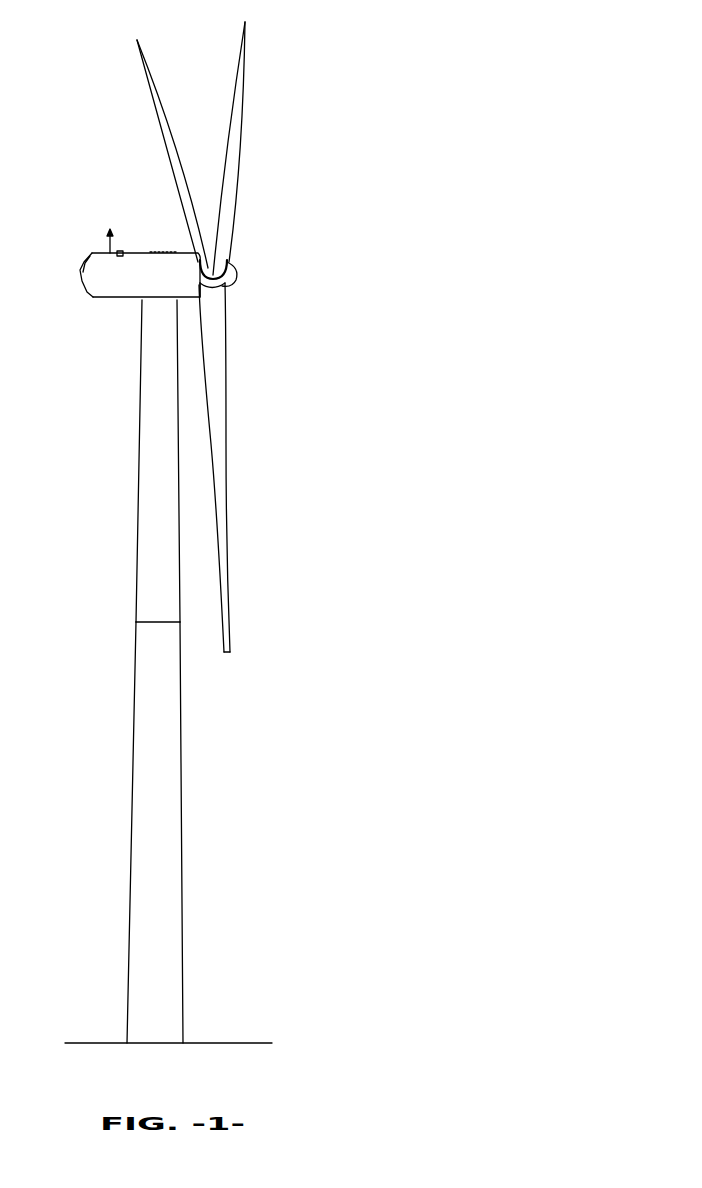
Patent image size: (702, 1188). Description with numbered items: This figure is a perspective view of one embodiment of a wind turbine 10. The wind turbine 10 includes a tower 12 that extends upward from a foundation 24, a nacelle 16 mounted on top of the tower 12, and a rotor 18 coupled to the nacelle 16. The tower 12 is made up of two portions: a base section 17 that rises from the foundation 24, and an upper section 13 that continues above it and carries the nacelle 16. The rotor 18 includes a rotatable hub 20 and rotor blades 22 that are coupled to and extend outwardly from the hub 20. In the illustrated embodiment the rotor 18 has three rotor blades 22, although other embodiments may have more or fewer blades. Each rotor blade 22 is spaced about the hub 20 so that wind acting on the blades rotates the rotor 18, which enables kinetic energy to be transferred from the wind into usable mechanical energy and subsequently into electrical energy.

The wind turbine 10 is at (369, 109).
The tower 12 is at (163, 720).
The upper section 13 is at (152, 502).
The nacelle 16 is at (112, 283).
The base section 17 is at (150, 853).
The rotor 18 is at (235, 254).
The rotatable hub 20 is at (228, 275).
The rotor blade 22 is at (158, 88).
The foundation 24 is at (110, 1043).